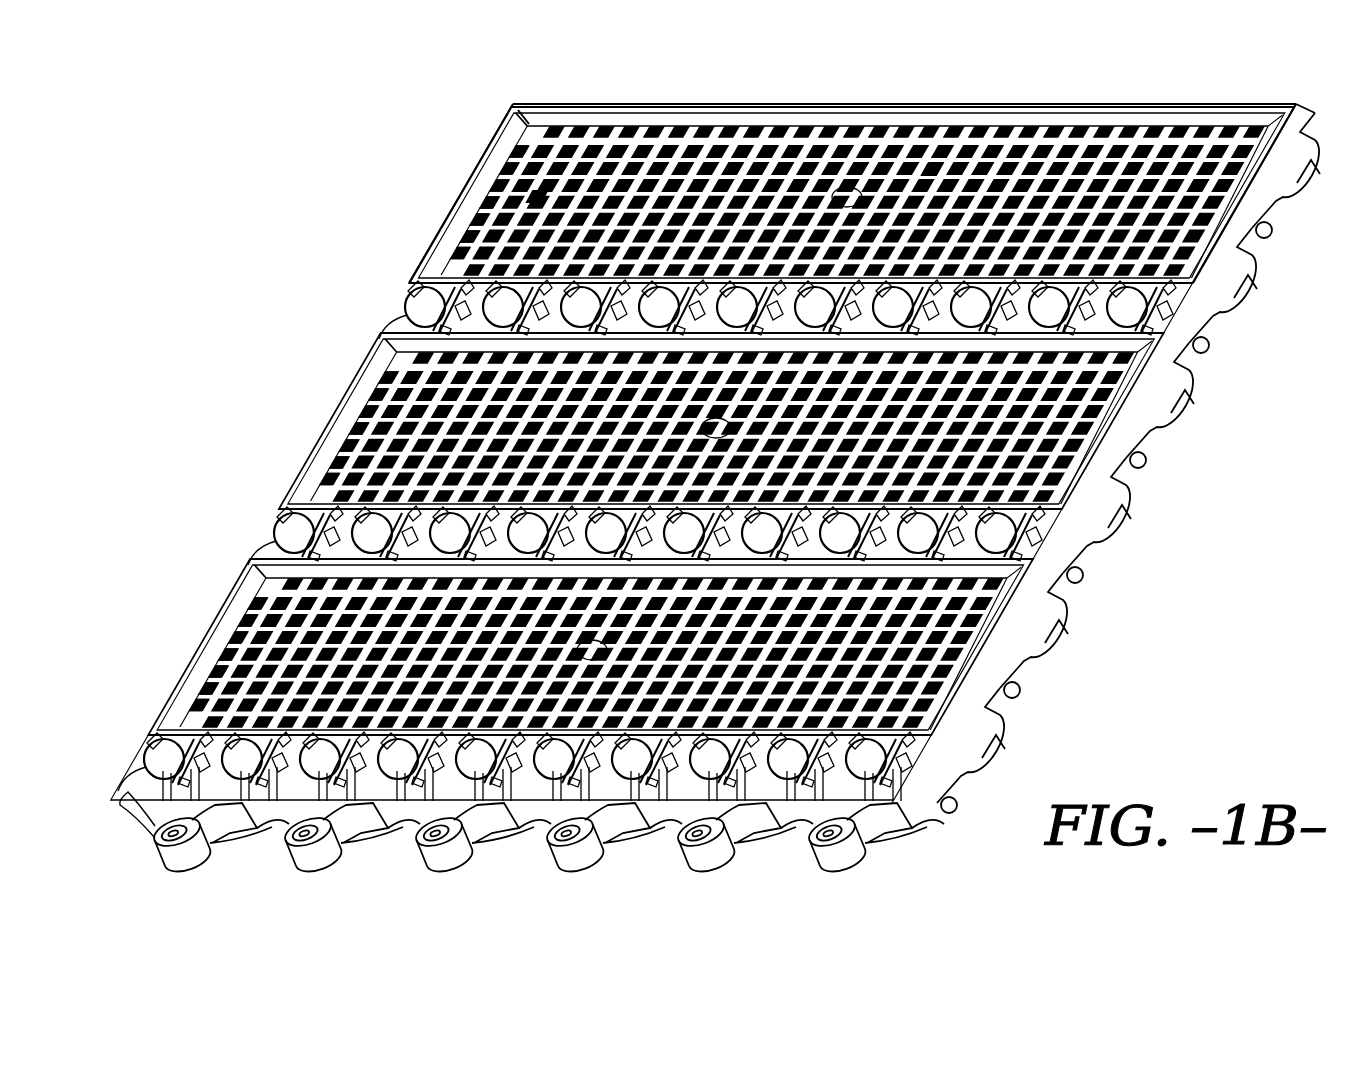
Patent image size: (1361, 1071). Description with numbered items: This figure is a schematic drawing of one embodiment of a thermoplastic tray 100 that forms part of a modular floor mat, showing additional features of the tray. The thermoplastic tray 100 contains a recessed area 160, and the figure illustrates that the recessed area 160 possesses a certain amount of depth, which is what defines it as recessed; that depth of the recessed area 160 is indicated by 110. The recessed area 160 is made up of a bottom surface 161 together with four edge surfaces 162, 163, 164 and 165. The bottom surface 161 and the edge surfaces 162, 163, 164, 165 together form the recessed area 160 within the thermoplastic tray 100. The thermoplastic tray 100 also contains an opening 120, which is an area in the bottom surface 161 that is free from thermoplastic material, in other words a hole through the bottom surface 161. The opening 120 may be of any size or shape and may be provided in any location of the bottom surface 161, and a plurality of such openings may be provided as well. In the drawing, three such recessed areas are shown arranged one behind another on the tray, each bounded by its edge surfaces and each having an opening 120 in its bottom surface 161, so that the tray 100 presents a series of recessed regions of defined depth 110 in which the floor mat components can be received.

The thermoplastic tray 100 is at (730, 458).
The depth of recessed area 110 is at (345, 395).
The opening 120 is at (606, 648).
The recessed area 160 is at (537, 198).
The bottom surface 161 is at (932, 168).
The edge surface 162 is at (592, 120).
The edge surface 163 is at (513, 138).
The edge surface 164 is at (1298, 124).
The edge surface 165 is at (862, 192).